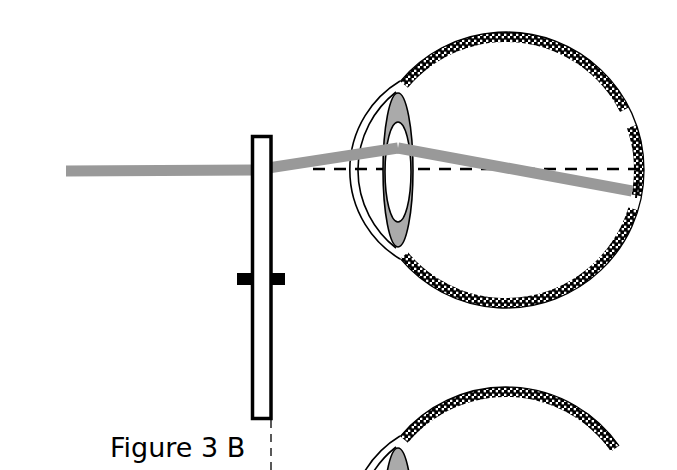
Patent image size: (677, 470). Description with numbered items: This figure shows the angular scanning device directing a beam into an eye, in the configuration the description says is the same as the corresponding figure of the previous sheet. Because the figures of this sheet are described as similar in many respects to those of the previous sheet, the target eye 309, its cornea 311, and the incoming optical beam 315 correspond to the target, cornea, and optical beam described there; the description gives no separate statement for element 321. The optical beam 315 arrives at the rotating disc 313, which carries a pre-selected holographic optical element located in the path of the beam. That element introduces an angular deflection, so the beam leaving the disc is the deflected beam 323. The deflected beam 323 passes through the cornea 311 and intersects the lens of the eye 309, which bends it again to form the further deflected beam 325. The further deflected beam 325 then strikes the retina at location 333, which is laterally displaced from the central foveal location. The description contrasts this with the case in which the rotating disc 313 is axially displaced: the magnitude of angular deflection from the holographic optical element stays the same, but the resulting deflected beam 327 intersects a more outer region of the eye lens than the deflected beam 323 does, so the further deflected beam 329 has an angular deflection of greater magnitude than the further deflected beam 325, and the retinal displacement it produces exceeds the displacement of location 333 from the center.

The eye 309 is at (561, 302).
The cornea 311 is at (362, 122).
The rotating disc 313 is at (277, 375).
The incoming light beam 315 is at (95, 163).
The second light beam 321 is at (42, 463).
The deflected beam 323 is at (317, 157).
The further deflected beam 325 is at (473, 153).
The deflected beam 327 is at (300, 469).
The further deflected beam 329 is at (484, 428).
The location 333 is at (627, 188).